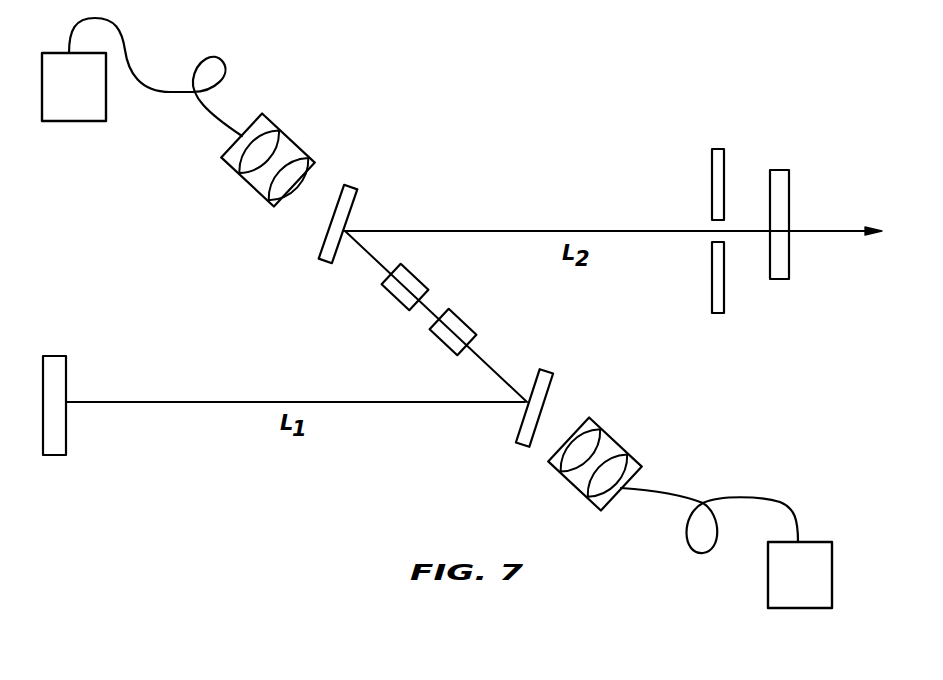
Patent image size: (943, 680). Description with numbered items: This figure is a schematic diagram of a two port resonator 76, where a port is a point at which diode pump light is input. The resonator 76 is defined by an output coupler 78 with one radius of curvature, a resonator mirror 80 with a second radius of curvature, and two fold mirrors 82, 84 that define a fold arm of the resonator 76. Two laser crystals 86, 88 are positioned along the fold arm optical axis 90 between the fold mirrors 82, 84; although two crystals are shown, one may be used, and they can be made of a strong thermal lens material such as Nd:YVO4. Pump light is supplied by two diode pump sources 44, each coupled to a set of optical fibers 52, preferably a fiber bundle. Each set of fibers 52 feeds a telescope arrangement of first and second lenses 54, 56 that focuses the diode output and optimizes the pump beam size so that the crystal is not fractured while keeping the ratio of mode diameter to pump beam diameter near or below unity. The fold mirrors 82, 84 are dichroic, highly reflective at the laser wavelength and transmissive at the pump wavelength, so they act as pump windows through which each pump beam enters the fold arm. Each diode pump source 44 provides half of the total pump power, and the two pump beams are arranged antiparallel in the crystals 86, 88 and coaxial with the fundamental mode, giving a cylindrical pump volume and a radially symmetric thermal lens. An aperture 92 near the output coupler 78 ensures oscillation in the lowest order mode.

The diode pump source 44 is at (436, 355).
The optical fibers 52 is at (435, 285).
The first lens 54 is at (276, 133).
The second lens 56 is at (312, 160).
The two port resonator 76 is at (613, 210).
The output coupler 78 is at (801, 201).
The resonator mirror 80 is at (284, 387).
The fold mirror 82 is at (318, 247).
The fold mirror 84 is at (561, 397).
The laser crystal 86 is at (428, 278).
The laser crystal 88 is at (476, 323).
The fold arm optical axis 90 is at (430, 314).
The aperture 92 is at (698, 209).